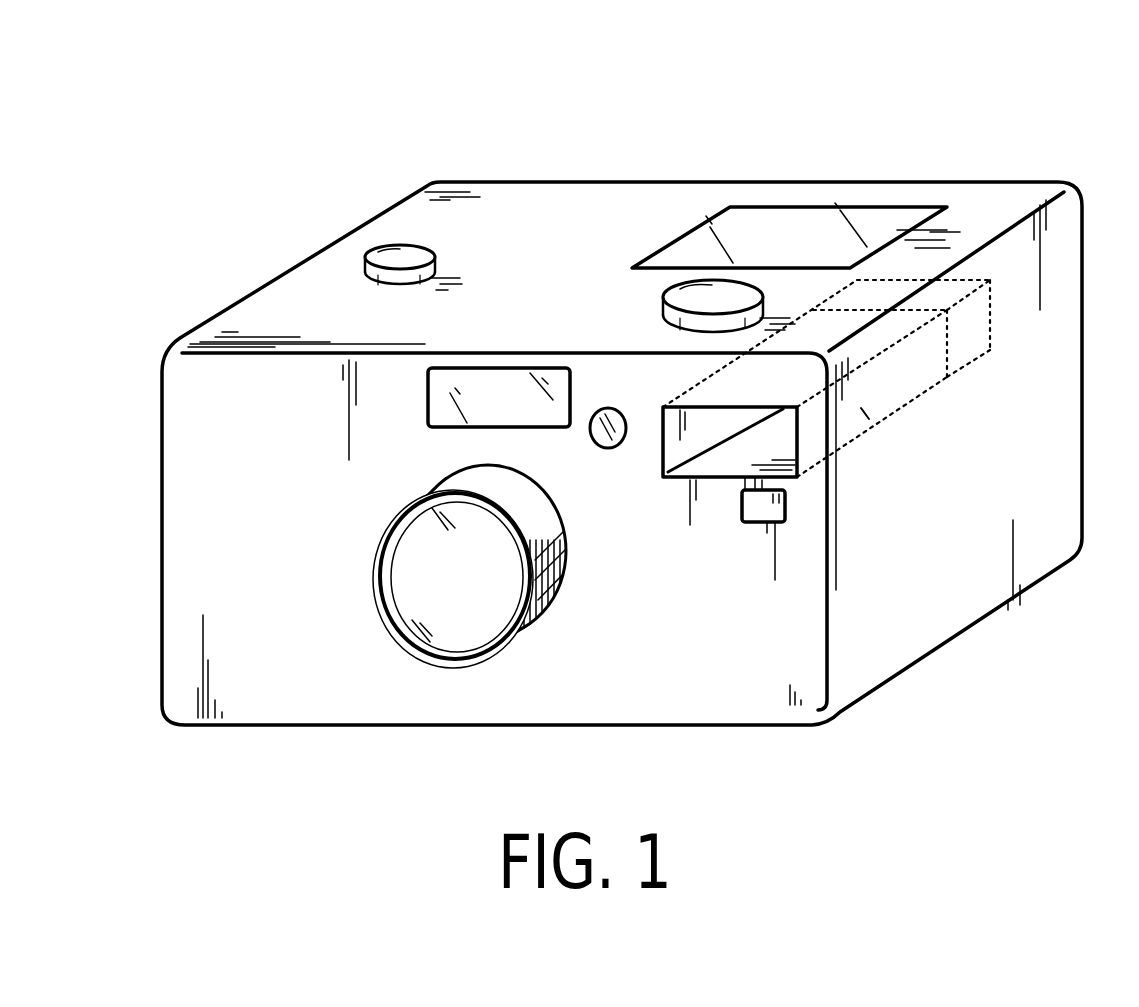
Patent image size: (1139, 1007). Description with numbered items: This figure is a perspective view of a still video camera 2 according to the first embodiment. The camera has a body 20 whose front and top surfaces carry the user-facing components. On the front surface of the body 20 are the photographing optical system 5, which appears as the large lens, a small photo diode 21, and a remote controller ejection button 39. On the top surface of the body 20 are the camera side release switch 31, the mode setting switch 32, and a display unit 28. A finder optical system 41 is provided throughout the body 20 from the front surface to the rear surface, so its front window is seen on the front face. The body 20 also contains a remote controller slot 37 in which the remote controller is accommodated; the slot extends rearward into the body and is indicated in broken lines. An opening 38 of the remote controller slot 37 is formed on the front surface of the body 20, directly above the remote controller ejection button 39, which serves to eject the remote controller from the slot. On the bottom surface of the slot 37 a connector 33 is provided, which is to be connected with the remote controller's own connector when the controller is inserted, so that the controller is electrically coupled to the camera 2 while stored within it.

The still video camera 2 is at (921, 123).
The body 20 is at (493, 168).
The display unit 28 is at (776, 222).
The camera side release switch 31 is at (377, 252).
The mode setting switch 32 is at (692, 303).
The finder optical system 41 is at (503, 388).
The photo diode 21 is at (606, 450).
The photographing optical system 5 is at (378, 565).
The opening 38 is at (747, 452).
The remote controller ejection button 39 is at (753, 524).
The connector 33 is at (963, 340).
The remote controller slot 37 is at (869, 419).